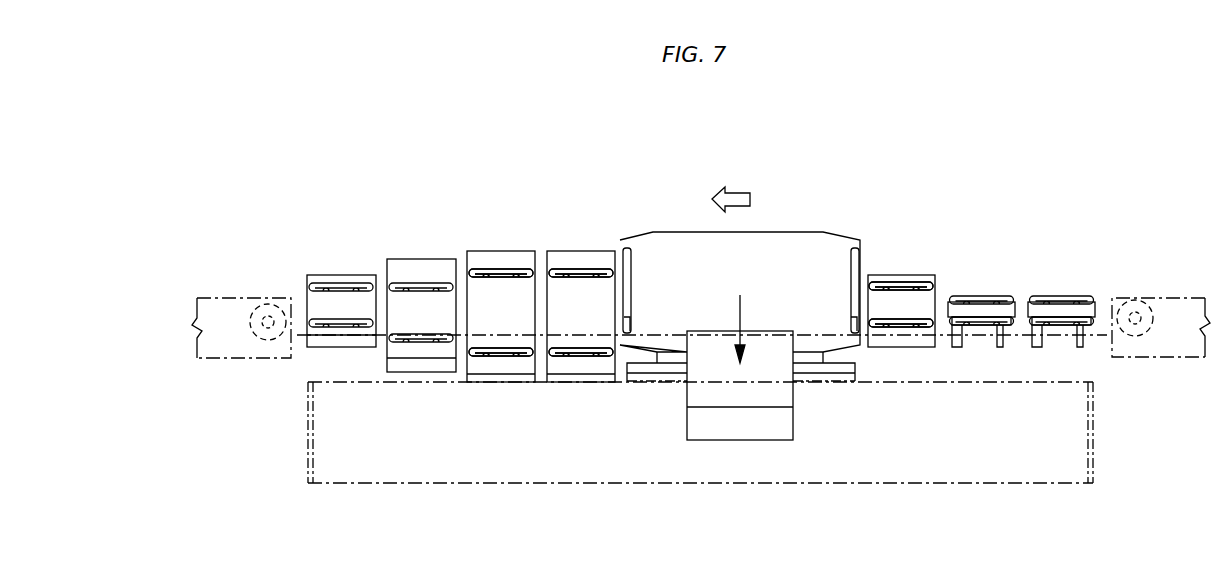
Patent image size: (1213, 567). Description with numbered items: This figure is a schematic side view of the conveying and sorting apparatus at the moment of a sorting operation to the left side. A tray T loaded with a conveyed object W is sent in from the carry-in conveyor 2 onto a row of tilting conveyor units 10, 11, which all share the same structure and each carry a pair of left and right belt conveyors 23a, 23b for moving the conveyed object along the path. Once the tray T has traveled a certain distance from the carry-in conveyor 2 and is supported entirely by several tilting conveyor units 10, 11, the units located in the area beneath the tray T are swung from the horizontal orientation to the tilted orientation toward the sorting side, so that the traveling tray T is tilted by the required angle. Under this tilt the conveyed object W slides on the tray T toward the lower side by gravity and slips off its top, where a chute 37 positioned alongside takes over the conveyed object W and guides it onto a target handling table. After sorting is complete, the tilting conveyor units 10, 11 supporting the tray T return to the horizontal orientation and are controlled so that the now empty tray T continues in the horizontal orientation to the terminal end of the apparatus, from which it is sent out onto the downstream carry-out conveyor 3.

The carry-in conveyor 2 is at (1173, 296).
The carry-out conveyor 3 is at (243, 296).
The tilting conveyor unit 10 is at (414, 257).
The tilting conveyor unit 11 is at (336, 273).
The belt conveyor 23a is at (576, 361).
The belt conveyor 23b is at (568, 266).
The chute 37 is at (937, 453).
The tray T is at (673, 250).
The conveyed object W is at (768, 355).